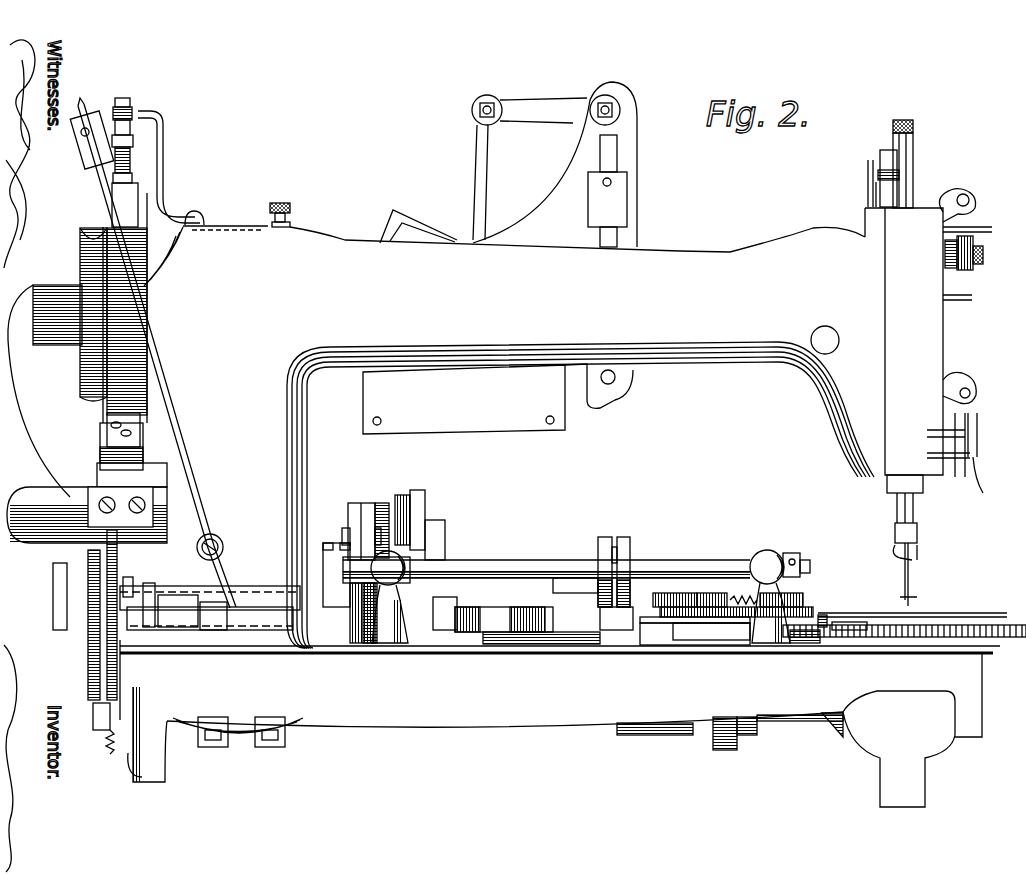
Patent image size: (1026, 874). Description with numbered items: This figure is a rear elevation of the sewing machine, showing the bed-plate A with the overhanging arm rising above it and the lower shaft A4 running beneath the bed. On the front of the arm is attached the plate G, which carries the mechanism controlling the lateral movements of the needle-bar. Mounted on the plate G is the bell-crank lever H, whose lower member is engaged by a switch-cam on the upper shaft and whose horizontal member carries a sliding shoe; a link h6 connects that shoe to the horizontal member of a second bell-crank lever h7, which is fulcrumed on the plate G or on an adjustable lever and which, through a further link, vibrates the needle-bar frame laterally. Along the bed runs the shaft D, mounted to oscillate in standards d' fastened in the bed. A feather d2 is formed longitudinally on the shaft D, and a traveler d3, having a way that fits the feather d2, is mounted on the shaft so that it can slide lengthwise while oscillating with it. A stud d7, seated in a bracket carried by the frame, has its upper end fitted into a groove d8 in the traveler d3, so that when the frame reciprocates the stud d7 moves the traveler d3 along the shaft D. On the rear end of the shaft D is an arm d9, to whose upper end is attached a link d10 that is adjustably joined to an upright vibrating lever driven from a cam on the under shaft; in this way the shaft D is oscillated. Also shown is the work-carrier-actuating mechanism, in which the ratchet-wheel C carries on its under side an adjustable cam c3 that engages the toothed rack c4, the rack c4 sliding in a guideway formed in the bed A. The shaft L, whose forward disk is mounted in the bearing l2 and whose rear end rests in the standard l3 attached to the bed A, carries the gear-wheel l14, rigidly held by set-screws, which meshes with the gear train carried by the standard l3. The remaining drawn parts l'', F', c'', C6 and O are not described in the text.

The bed-plate A is at (509, 437).
The lower shaft A4 is at (305, 732).
The thread guide tube O is at (143, 233).
The bell-crank lever H is at (413, 222).
The link h6 is at (482, 175).
The bell-crank lever h7 is at (527, 105).
The plate G is at (464, 399).
The shaft D is at (495, 563).
The standards d' is at (780, 548).
The feather d2 is at (577, 580).
The traveler d3 is at (632, 545).
The stud d7 is at (613, 622).
The groove d8 is at (610, 533).
The arm d9 is at (390, 485).
The link d10 is at (362, 508).
The collar l'' is at (351, 526).
The bearing l2 is at (418, 507).
The standard l3 is at (347, 620).
The gear-wheel l14 is at (368, 633).
The feed dog F' is at (504, 606).
The support c'' is at (756, 585).
The cam c3 is at (803, 598).
The toothed rack c4 is at (610, 621).
The ratchet-wheel C is at (813, 612).
The feed plate C6 is at (635, 628).